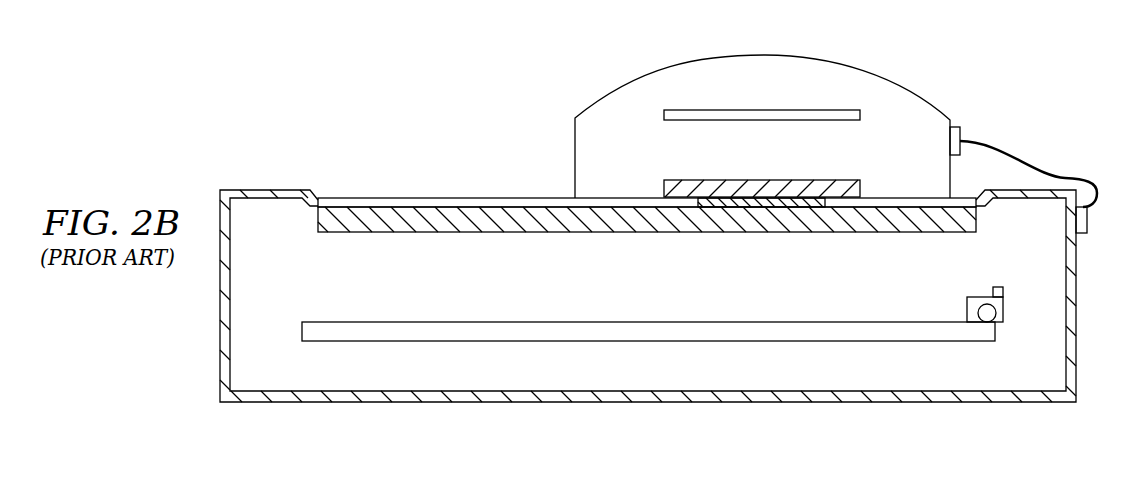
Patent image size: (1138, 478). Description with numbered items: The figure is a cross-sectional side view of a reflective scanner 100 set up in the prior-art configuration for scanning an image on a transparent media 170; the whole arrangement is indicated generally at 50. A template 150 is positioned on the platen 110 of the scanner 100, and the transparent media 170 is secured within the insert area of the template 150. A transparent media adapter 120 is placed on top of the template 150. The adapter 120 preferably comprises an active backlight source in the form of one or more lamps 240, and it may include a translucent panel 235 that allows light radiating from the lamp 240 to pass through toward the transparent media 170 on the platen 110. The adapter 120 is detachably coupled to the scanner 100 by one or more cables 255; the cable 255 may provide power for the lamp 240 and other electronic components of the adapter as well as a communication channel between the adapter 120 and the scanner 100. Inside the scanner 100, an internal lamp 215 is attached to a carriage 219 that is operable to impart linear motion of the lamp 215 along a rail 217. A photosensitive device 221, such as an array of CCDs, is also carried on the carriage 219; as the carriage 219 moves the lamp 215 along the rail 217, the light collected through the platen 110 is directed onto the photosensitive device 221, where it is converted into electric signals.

The processing system 50 is at (254, 124).
The reflective scanner 100 is at (221, 312).
The platen 110 is at (567, 233).
The transparent media adapter 120 is at (858, 70).
The template 150 is at (435, 206).
The transparent media 170 is at (727, 204).
The lamp 215 is at (998, 313).
The rail 217 is at (408, 321).
The carriage 219 is at (975, 297).
The photosensitive device 221 is at (998, 287).
The translucent panel 235 is at (784, 180).
The lamp 240 is at (762, 110).
The cable 255 is at (1020, 165).